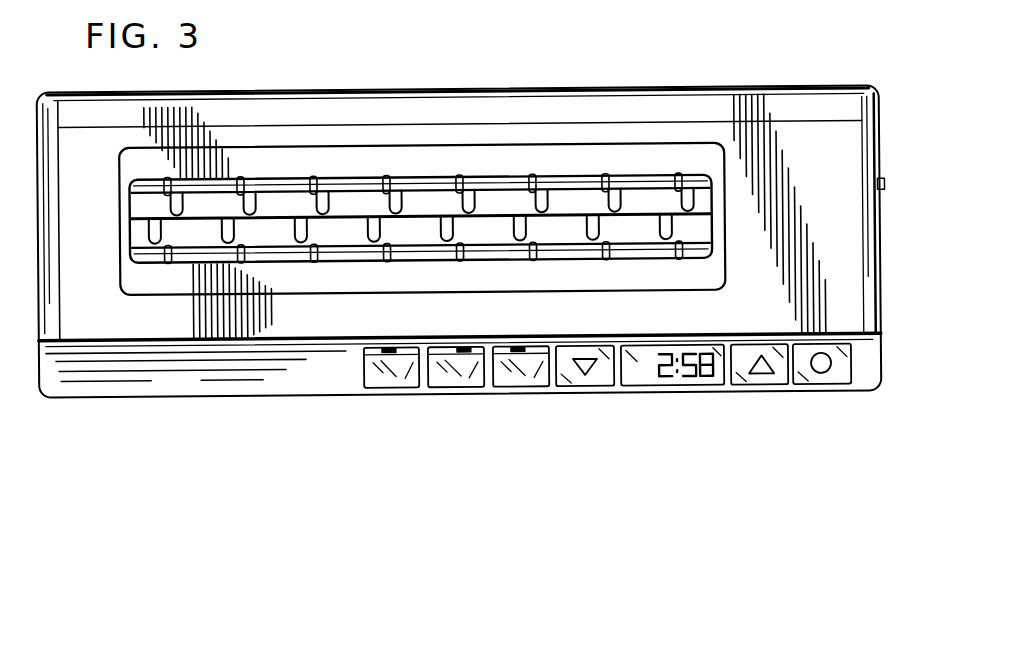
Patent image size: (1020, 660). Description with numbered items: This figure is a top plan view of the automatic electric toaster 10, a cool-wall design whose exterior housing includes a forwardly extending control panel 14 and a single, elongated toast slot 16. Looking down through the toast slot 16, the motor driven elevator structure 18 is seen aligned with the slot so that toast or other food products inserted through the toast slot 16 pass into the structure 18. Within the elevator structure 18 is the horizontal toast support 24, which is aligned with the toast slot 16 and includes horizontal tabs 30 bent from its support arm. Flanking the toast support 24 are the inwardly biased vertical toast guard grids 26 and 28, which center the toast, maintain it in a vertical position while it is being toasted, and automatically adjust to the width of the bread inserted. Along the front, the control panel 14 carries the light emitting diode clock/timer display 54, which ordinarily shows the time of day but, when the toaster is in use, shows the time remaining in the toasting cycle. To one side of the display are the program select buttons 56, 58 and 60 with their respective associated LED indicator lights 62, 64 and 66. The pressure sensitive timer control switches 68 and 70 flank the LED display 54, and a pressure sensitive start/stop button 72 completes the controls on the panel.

The automatic electric toaster 10 is at (700, 80).
The control panel 14 is at (293, 388).
The toast slot 16 is at (505, 180).
The motor driven elevator structure 18 is at (575, 205).
The horizontal toast support 24 is at (270, 212).
The toast guard grid 26 is at (437, 185).
The toast guard grid 28 is at (421, 343).
The horizontal tabs 30 is at (318, 203).
The LED clock/timer display 54 is at (640, 375).
The program select button 56 is at (385, 380).
The program select button 58 is at (453, 380).
The program select button 60 is at (515, 378).
The LED indicator light 62 is at (392, 353).
The LED indicator light 64 is at (463, 352).
The LED indicator light 66 is at (530, 352).
The timer control switch 68 is at (595, 380).
The timer control switch 70 is at (767, 377).
The start/stop button 72 is at (832, 377).